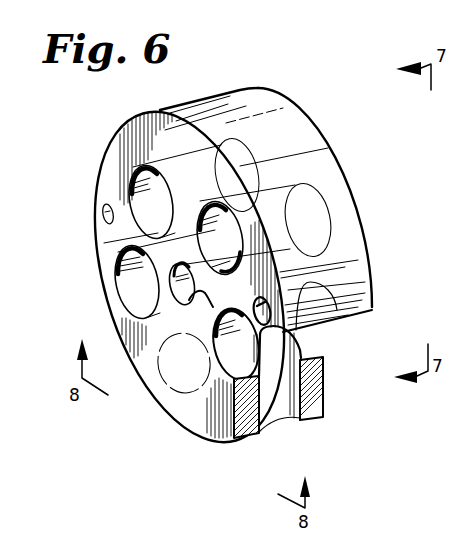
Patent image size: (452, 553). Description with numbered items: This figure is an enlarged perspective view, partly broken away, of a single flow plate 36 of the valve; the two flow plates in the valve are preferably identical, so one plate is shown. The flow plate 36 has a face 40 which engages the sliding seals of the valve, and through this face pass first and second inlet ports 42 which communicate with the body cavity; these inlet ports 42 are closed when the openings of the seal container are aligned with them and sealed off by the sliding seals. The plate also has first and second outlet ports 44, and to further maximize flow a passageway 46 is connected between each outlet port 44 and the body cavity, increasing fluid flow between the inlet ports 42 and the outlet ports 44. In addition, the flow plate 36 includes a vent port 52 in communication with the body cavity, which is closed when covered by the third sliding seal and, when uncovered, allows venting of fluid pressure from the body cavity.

The flow plate 36 is at (258, 108).
The face 40 is at (329, 148).
The inlet ports 42 is at (224, 218).
The outlet ports 44 is at (120, 273).
The passageway 46 is at (258, 418).
The vent port 52 is at (184, 306).